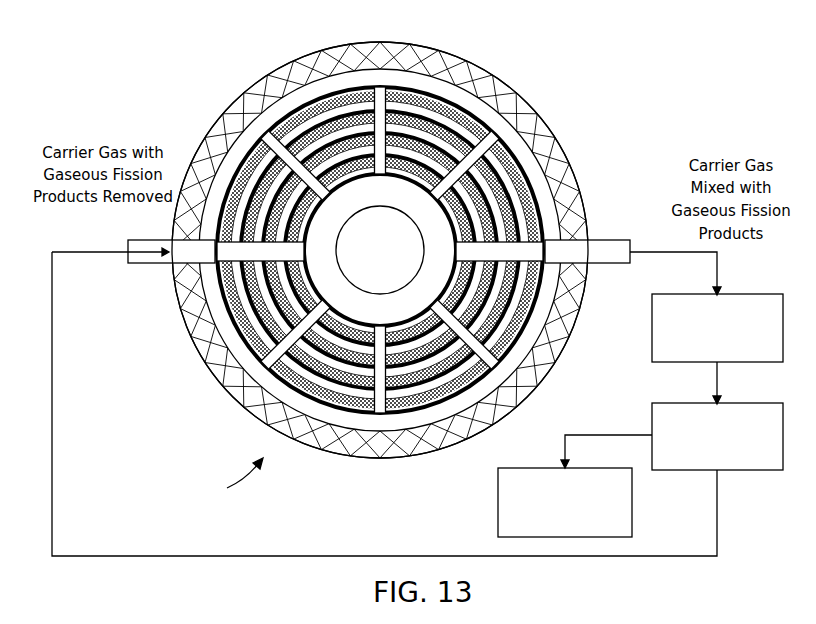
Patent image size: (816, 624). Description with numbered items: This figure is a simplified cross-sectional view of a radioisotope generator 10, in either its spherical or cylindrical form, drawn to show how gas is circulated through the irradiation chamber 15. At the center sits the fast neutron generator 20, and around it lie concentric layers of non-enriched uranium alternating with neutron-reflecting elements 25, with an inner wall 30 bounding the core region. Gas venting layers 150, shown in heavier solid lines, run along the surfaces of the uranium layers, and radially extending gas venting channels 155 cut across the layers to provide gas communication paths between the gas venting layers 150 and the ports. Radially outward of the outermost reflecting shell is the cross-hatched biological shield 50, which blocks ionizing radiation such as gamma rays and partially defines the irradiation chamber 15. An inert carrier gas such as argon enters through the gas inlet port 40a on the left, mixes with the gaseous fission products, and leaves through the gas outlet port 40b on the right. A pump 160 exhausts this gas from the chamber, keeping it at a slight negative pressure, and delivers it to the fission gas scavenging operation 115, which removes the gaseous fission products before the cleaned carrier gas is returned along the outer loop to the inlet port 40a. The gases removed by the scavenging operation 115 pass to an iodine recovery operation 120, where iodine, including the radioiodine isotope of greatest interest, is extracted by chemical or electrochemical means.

The radioisotope generator 10 is at (358, 274).
The irradiation chamber 15 is at (390, 78).
The fast neutron generator 20 is at (372, 209).
The neutron-reflecting elements 25 is at (437, 100).
The inner core wall 30 is at (520, 160).
The gas inlet port 40a is at (148, 240).
The gas outlet port 40b is at (607, 238).
The biological shield 50 is at (313, 66).
The scavenging operation 115 is at (737, 404).
The recovery operation 120 is at (588, 468).
The gas venting layers 150 is at (334, 156).
The gas venting channels 155 is at (245, 334).
The pump 160 is at (737, 295).